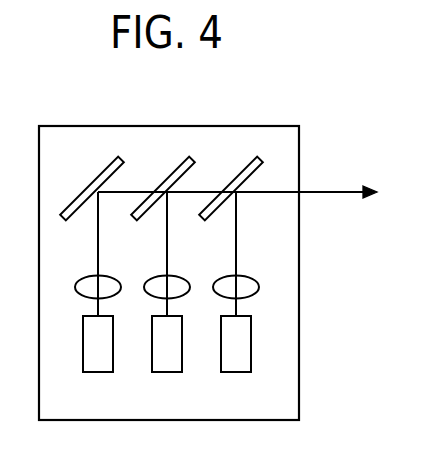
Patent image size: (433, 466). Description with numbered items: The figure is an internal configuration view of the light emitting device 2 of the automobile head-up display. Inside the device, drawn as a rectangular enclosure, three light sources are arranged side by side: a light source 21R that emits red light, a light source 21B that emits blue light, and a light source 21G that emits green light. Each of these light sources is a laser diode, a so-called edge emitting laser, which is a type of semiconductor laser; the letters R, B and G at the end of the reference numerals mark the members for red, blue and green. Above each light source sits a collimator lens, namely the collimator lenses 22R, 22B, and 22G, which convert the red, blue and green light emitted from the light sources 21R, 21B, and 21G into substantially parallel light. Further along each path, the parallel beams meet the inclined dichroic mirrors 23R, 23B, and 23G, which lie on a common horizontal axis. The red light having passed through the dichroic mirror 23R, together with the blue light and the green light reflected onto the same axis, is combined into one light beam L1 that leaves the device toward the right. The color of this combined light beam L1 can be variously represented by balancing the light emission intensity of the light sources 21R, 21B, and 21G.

The light emitting device 2 is at (95, 127).
The light source 21R is at (87, 372).
The light source 21B is at (156, 372).
The light source 21G is at (225, 372).
The collimator lens 22R is at (83, 276).
The collimator lens 22B is at (152, 276).
The collimator lens 22G is at (221, 276).
The dichroic mirror 23R is at (88, 182).
The dichroic mirror 23B is at (173, 168).
The dichroic mirror 23G is at (240, 168).
The light beam L1 is at (313, 192).